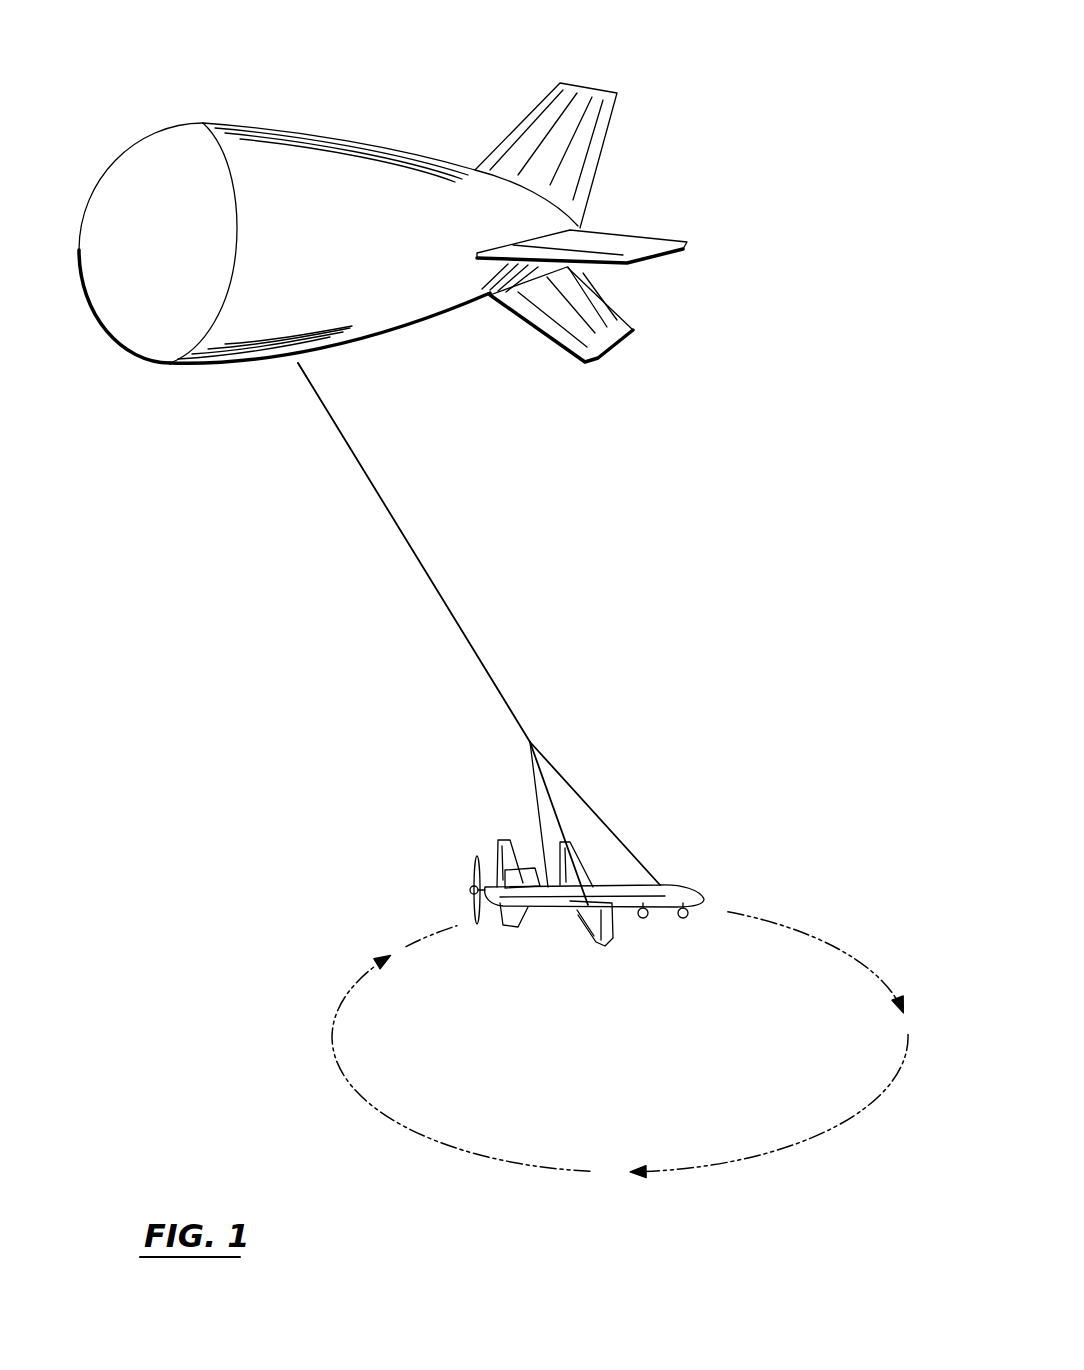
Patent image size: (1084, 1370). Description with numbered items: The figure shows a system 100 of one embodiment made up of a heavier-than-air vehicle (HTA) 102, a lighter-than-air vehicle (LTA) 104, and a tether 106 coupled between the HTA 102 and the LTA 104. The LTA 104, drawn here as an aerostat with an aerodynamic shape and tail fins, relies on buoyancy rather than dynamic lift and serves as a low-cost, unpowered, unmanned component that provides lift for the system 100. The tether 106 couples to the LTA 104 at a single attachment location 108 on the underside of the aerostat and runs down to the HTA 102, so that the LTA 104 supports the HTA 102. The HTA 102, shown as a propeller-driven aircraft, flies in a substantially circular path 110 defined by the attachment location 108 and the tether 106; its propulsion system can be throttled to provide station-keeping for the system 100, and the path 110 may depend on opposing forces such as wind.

The system 100 is at (782, 138).
The heavier-than-air vehicle (HTA) 102 is at (695, 887).
The lighter-than-air vehicle (LTA) 104 is at (313, 130).
The tether 106 is at (483, 653).
The attachment location 108 is at (298, 366).
The path 110 is at (818, 937).